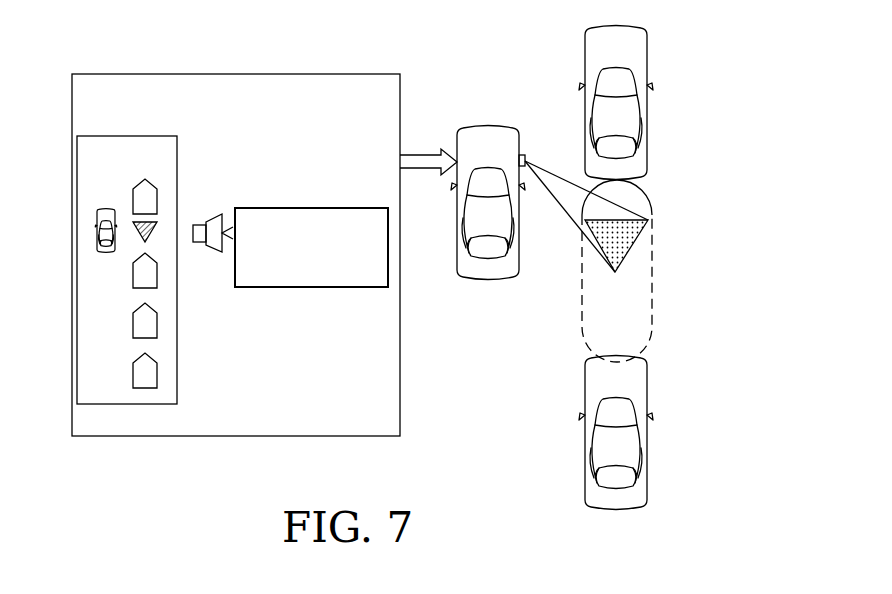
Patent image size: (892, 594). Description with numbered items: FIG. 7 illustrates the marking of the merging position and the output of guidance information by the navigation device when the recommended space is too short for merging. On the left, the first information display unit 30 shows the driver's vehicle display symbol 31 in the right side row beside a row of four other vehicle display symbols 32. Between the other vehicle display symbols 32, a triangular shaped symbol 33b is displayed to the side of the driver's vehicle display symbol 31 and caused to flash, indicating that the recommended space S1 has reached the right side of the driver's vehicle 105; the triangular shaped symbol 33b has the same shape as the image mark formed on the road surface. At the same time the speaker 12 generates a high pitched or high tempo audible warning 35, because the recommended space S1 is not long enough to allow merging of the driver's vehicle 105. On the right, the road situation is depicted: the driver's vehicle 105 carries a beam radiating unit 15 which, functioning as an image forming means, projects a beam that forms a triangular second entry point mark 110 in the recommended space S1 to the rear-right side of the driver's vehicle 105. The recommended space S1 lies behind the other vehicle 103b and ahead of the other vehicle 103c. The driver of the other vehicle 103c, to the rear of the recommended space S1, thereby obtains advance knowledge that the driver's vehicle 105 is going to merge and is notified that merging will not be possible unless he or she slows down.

The first information display unit 30 is at (137, 136).
The driver's vehicle display symbol 31 is at (97, 232).
The other vehicle display symbols 32 is at (133, 198).
The triangular shaped symbol 33b is at (157, 232).
The speaker 12 is at (200, 222).
The audible warning 35 is at (297, 288).
The driver's vehicle 105 is at (495, 123).
The beam radiating unit 15 is at (527, 157).
The other vehicle 103b is at (647, 48).
The other vehicle 103c is at (647, 378).
The second entry point mark 110 is at (650, 214).
The recommended space S1 is at (652, 285).